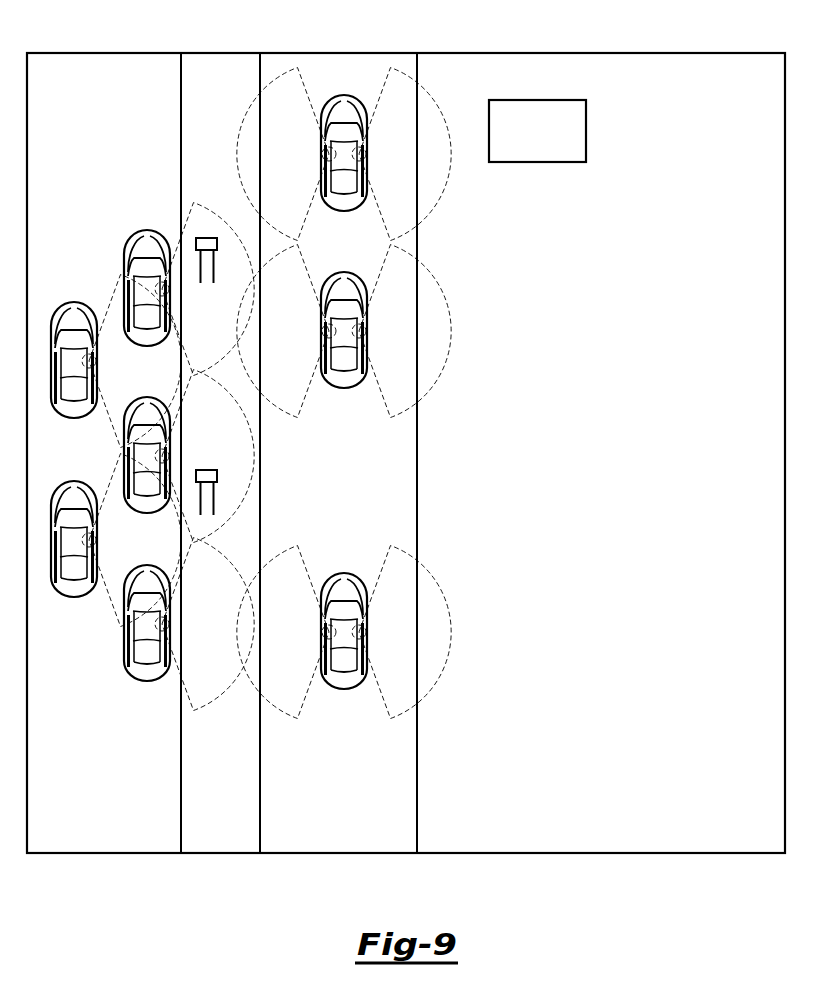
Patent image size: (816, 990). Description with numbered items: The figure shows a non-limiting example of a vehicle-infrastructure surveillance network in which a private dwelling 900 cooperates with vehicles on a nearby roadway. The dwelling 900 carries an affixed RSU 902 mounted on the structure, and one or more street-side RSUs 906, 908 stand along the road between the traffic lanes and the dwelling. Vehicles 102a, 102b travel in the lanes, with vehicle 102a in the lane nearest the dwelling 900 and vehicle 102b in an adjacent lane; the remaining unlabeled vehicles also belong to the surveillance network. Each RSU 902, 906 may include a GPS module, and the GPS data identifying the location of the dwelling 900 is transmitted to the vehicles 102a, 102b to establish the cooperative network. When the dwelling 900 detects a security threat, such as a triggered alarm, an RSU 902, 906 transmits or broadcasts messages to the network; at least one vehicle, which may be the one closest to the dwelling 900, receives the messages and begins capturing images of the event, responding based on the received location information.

The vehicle 102a is at (345, 94).
The vehicle 102b is at (124, 256).
The private dwelling 900 is at (612, 468).
The affixed RSU 902 is at (586, 130).
The street-side RSU 906 is at (206, 237).
The roadside sensor 908 is at (218, 477).